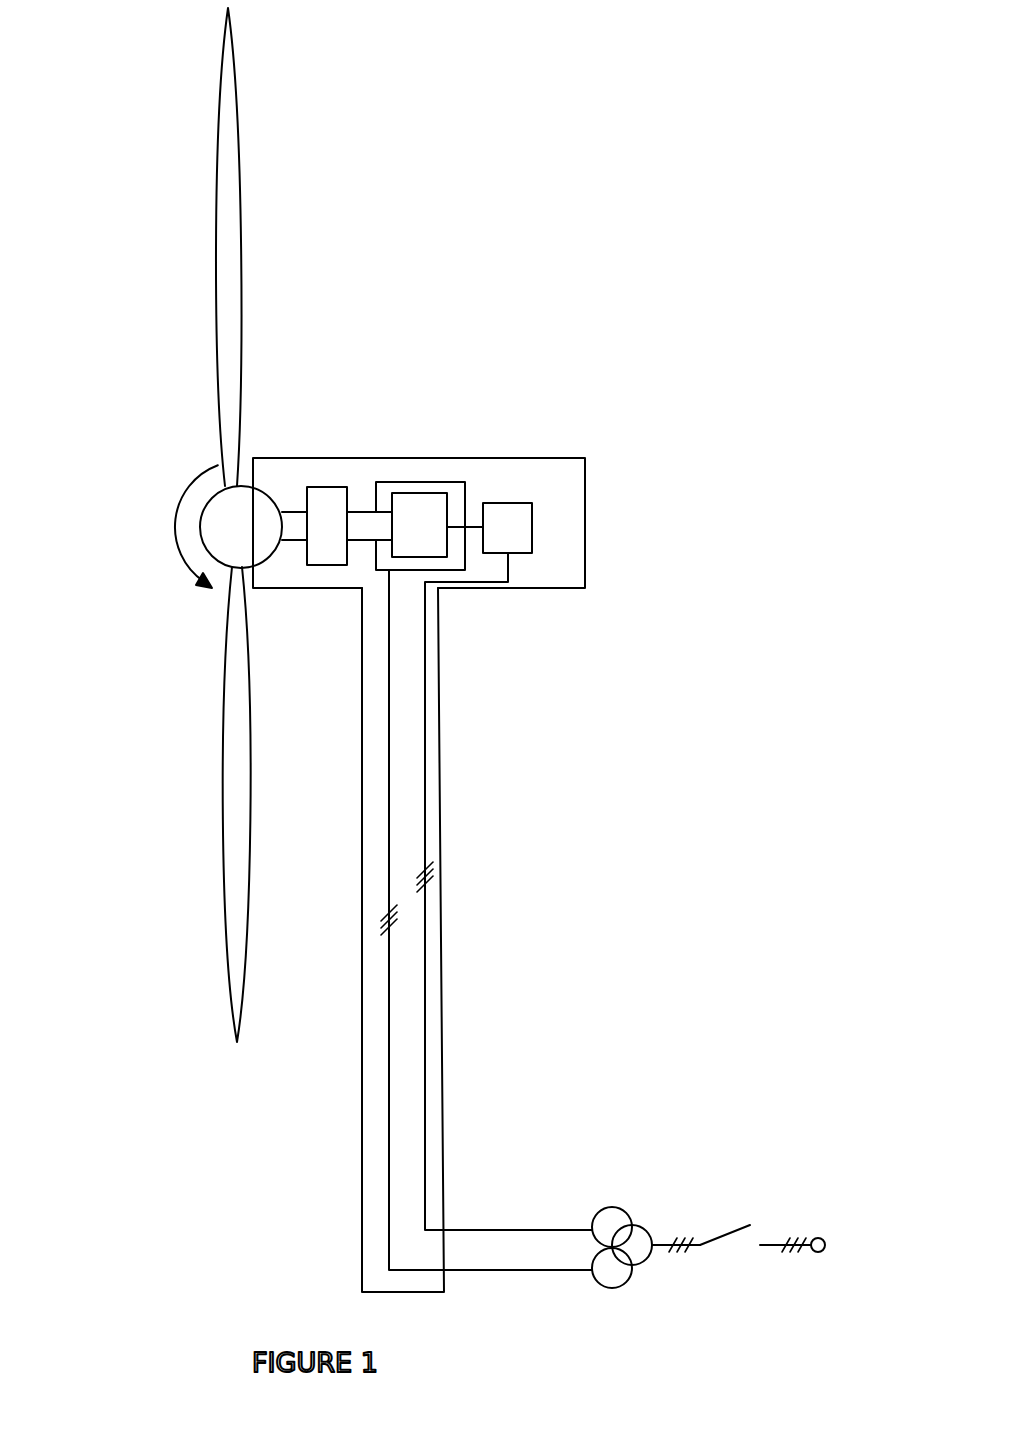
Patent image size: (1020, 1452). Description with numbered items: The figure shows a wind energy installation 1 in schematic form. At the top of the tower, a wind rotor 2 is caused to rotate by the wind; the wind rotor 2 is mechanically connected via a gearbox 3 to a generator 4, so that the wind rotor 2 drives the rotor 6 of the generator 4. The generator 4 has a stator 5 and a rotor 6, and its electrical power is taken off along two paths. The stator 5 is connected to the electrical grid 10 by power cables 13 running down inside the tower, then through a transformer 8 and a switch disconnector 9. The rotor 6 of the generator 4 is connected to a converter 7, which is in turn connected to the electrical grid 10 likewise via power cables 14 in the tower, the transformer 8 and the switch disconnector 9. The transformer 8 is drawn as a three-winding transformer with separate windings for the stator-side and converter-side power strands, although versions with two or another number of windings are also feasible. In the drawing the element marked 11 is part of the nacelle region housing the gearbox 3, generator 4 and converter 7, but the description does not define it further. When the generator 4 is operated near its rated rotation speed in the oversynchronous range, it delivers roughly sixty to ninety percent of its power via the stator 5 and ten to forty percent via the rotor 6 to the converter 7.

The wind energy installation 1 is at (170, 944).
The wind rotor 2 is at (213, 529).
The gearbox 3 is at (327, 500).
The generator 4 is at (383, 487).
The stator 5 is at (465, 485).
The rotor 6 is at (430, 530).
The converter 7 is at (522, 540).
The transformer 8 is at (618, 1223).
The switch disconnector 9 is at (735, 1233).
The electrical grid 10 is at (808, 1250).
The nacelle 11 is at (348, 575).
The power cables 13 is at (389, 700).
The power cables 14 is at (425, 707).